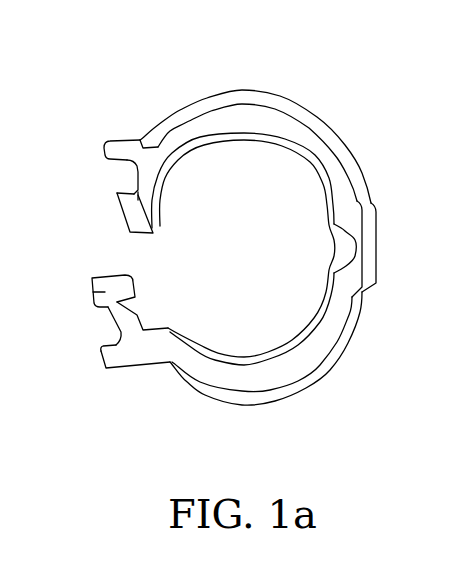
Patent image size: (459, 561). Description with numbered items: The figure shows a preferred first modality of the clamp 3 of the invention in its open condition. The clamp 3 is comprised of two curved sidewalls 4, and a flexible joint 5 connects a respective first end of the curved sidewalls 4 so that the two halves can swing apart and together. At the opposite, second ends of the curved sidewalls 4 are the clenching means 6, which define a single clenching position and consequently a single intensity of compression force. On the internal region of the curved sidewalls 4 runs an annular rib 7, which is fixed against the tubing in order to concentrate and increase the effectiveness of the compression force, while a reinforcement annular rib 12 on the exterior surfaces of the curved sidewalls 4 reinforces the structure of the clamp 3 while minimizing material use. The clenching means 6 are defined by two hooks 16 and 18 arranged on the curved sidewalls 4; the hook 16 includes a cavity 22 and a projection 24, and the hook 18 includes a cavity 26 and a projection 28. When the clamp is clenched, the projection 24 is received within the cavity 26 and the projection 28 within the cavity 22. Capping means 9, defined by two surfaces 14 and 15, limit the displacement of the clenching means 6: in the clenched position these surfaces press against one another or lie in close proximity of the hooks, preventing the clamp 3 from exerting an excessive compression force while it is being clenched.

The clamp 3 is at (345, 110).
The curved sidewalls 4 is at (270, 118).
The flexible joint 5 is at (342, 247).
The clenching means 6 is at (121, 213).
The annular rib 7 is at (298, 158).
The capping means 9 is at (117, 172).
The reinforcement annular rib 12 is at (232, 100).
The surface 14 is at (103, 152).
The surface 15 is at (92, 279).
The hook 16 is at (134, 139).
The hook 18 is at (104, 335).
The cavity 22 is at (134, 176).
The projection 24 is at (140, 215).
The cavity 26 is at (100, 313).
The projection 28 is at (105, 292).